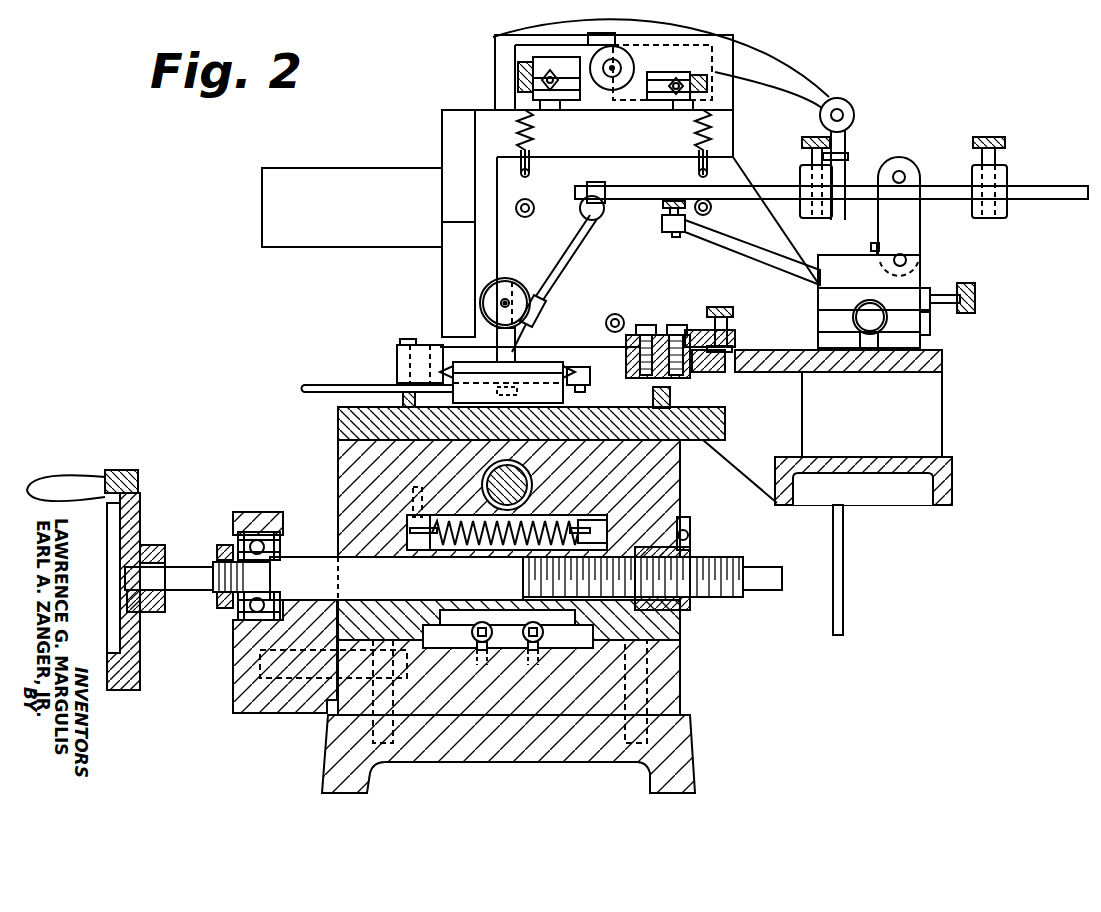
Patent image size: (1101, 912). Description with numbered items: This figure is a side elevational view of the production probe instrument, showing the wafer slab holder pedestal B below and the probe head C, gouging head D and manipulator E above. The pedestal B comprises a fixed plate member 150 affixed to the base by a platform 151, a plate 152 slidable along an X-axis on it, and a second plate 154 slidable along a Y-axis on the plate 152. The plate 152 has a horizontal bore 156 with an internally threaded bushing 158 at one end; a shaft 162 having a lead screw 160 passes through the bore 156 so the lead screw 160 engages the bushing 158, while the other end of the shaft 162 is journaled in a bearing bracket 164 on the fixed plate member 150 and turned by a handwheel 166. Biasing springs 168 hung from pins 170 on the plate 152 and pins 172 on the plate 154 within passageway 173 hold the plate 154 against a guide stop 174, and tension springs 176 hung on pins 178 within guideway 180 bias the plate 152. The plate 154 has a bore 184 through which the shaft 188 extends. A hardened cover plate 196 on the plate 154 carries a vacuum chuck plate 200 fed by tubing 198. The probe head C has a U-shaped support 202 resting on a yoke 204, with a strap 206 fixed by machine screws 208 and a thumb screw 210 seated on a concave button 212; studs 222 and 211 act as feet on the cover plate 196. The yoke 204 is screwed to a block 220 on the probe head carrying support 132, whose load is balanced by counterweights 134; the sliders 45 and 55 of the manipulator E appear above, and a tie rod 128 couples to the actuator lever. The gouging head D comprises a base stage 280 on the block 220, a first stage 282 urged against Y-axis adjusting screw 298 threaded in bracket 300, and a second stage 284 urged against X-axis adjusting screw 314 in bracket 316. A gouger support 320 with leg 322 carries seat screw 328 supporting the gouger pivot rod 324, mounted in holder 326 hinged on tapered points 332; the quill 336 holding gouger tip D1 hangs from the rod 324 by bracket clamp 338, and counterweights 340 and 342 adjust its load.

The second stage Y-axis slider 55 is at (545, 60).
The first stage X-axis slider 45 is at (690, 94).
The probe head carrying support 132 is at (442, 130).
The counterweights 134 is at (265, 193).
The bracket clamp 338 is at (603, 186).
The counterweight 340 is at (808, 176).
The counterweight 342 is at (1003, 175).
The gouger pivot rod 324 is at (1068, 199).
The holder 326 is at (907, 228).
The seat screw 328 is at (672, 238).
The leg 322 is at (738, 243).
The gouger support 320 is at (828, 258).
The tapered points 332 is at (918, 262).
The Y-axis adjusting screw 298 is at (866, 308).
The second stage 284 is at (912, 295).
The quill 336 is at (573, 253).
The first stage 282 is at (823, 318).
The strap 206 is at (698, 330).
The machine screws 208 is at (675, 325).
The thumb screw 210 is at (725, 307).
The X-axis adjusting screw 314 is at (975, 300).
The yoke 204 is at (770, 358).
The bracket 316 is at (930, 318).
The tubing 198 is at (350, 385).
The vacuum chuck plate 200 is at (557, 398).
The base stage 280 is at (912, 338).
The bracket 300 is at (875, 342).
The concave button 212 is at (717, 370).
The U-shaped support 202 is at (657, 379).
The stud 211 is at (673, 397).
The stud 222 is at (403, 398).
The cover plate 196 is at (352, 425).
The block 220 is at (935, 418).
The bore 184 is at (487, 475).
The shaft 188 is at (527, 473).
The second plate 154 is at (662, 472).
The handwheel 166 is at (140, 515).
The pins 172 is at (407, 523).
The pins 170 is at (623, 533).
The guide stop 174 is at (690, 521).
The horizontal bore 156 is at (337, 557).
The internally threaded bushing 158 is at (690, 550).
The shaft 162 is at (403, 591).
The passageway 173 is at (433, 535).
The biasing springs 168 is at (497, 540).
The tension springs 176 is at (532, 618).
The lead screw 160 is at (733, 593).
The tie rod 128 is at (843, 595).
The bearing bracket 164 is at (248, 633).
The plate 152 is at (672, 620).
The guideway 180 is at (583, 637).
The pins 178 is at (530, 670).
The fixed plate member 150 is at (665, 680).
The platform 151 is at (340, 773).
The manipulator E is at (510, 75).
The probe head C is at (432, 343).
The gouging head D is at (637, 200).
The gouger tip D1 is at (520, 356).
The wafer slab holder pedestal B is at (677, 750).